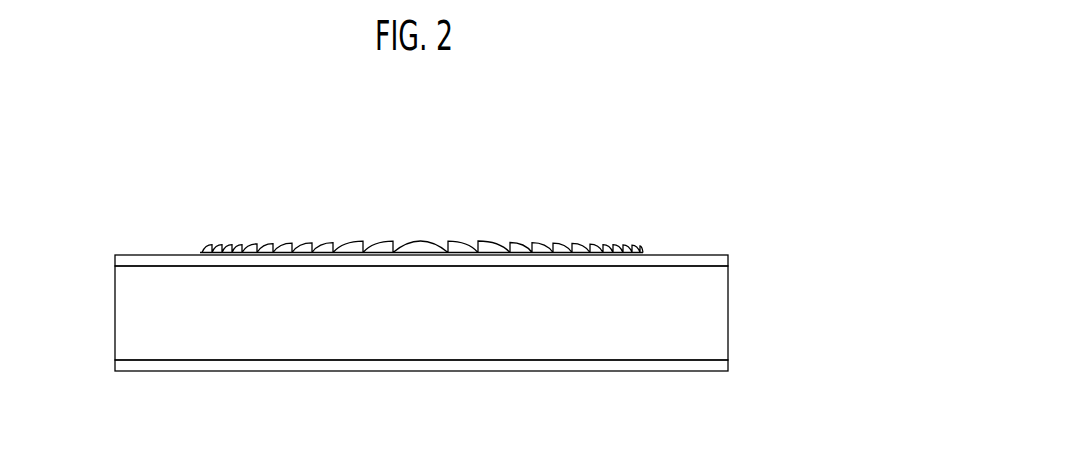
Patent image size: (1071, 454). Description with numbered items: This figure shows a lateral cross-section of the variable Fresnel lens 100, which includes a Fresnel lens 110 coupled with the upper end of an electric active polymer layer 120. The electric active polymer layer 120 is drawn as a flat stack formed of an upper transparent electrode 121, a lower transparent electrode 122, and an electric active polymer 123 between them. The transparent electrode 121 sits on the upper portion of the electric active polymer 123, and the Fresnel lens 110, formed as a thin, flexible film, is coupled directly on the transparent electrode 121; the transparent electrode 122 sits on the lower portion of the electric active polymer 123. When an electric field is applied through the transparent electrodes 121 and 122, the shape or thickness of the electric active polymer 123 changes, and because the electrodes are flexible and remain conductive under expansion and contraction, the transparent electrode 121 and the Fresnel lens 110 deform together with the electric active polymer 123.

The variable Fresnel lens 100 is at (726, 149).
The Fresnel lens 110 is at (624, 231).
The electric active polymer layer 120 is at (103, 255).
The transparent electrode 121 is at (741, 268).
The transparent electrode 122 is at (741, 356).
The electric active polymer 123 is at (624, 336).